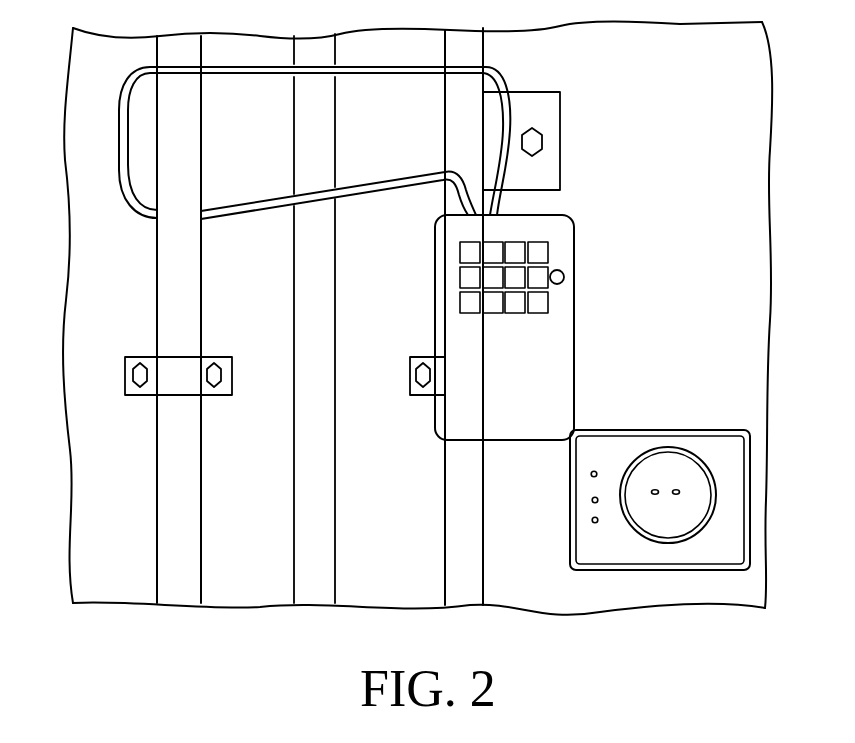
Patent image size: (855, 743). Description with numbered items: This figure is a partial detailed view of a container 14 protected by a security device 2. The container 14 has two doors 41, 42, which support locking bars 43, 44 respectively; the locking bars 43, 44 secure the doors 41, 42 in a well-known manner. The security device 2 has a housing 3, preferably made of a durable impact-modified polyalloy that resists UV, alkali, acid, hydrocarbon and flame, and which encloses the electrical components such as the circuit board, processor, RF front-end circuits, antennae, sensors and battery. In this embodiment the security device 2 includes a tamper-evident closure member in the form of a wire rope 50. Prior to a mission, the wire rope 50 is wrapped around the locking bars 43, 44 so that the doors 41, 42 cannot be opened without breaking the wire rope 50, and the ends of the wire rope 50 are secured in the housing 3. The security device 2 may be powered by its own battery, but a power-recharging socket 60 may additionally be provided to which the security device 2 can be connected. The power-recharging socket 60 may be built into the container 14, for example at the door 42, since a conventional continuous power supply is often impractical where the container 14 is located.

The security device 2 is at (580, 266).
The housing 3 is at (560, 348).
The container 14 is at (660, 592).
The door 41 is at (250, 577).
The door 42 is at (362, 592).
The locking bar 43 is at (180, 583).
The locking bar 44 is at (472, 590).
The wire rope 50 is at (377, 188).
The power-recharging socket 60 is at (664, 473).